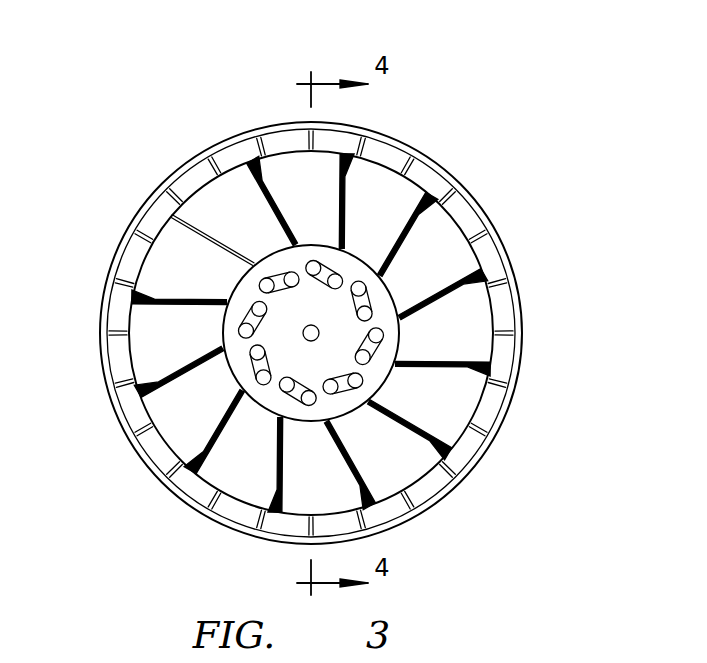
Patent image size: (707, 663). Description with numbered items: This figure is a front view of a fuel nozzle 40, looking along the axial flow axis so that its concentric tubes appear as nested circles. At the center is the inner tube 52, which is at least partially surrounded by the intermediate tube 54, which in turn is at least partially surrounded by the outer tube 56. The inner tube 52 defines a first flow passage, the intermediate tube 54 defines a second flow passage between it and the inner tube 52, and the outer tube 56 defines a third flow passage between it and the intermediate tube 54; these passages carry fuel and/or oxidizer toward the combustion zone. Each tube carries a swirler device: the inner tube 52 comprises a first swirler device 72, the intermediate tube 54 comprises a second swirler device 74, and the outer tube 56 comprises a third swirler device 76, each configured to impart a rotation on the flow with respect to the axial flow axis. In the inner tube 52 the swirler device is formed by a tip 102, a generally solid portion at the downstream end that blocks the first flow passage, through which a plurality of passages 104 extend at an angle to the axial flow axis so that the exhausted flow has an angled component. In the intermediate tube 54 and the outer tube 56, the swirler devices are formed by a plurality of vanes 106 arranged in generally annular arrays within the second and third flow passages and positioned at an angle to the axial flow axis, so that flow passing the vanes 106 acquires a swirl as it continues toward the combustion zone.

The fuel nozzle 40 is at (473, 120).
The inner tube 52 is at (378, 270).
The intermediate tube 54 is at (392, 160).
The outer tube 56 is at (470, 195).
The first swirler device 72 is at (398, 372).
The second swirler device 74 is at (235, 190).
The third swirler device 76 is at (110, 312).
The tip 102 is at (388, 318).
The passage 104 is at (395, 338).
The vane 106 is at (282, 172).